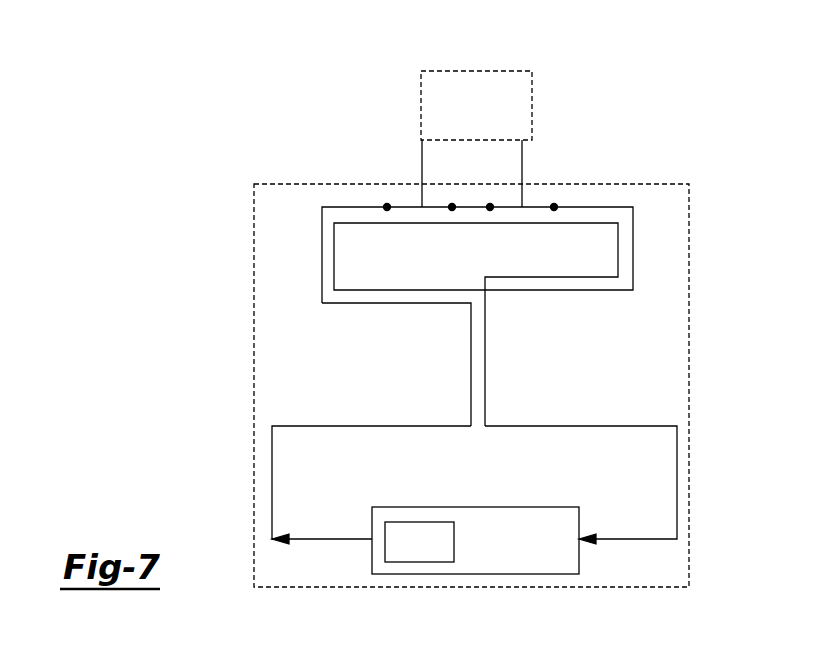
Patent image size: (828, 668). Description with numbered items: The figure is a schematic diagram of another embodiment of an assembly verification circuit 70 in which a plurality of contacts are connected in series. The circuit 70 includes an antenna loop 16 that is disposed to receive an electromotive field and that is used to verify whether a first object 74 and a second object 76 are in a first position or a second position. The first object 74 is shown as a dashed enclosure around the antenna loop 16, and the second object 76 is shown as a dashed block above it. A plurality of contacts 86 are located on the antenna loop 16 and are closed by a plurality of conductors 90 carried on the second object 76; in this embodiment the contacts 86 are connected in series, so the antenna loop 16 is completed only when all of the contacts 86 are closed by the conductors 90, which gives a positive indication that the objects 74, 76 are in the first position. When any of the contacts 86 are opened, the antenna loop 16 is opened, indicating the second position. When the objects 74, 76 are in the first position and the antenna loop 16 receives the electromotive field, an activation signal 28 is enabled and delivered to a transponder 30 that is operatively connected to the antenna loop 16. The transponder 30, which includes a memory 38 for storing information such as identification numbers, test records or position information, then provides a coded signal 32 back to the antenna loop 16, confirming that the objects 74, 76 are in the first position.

The circuit 70 is at (658, 92).
The first object 74 is at (254, 184).
The second object 76 is at (422, 97).
The antenna loop 16 is at (633, 207).
The conductors 90 is at (510, 206).
The contacts 86 is at (453, 211).
The activation signal 28 is at (665, 539).
The coded signal 32 is at (327, 539).
The transponder 30 is at (580, 574).
The memory 38 is at (454, 535).